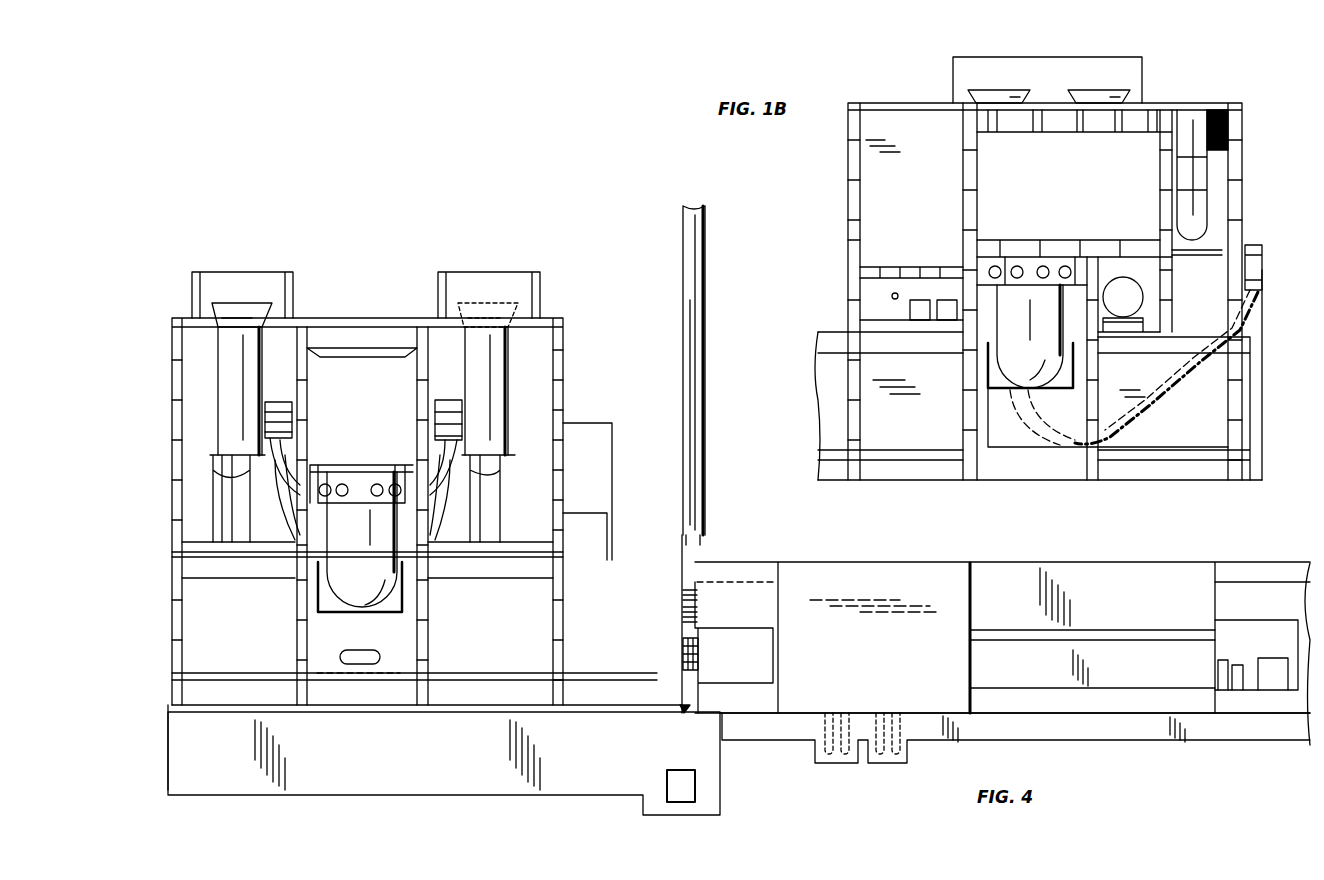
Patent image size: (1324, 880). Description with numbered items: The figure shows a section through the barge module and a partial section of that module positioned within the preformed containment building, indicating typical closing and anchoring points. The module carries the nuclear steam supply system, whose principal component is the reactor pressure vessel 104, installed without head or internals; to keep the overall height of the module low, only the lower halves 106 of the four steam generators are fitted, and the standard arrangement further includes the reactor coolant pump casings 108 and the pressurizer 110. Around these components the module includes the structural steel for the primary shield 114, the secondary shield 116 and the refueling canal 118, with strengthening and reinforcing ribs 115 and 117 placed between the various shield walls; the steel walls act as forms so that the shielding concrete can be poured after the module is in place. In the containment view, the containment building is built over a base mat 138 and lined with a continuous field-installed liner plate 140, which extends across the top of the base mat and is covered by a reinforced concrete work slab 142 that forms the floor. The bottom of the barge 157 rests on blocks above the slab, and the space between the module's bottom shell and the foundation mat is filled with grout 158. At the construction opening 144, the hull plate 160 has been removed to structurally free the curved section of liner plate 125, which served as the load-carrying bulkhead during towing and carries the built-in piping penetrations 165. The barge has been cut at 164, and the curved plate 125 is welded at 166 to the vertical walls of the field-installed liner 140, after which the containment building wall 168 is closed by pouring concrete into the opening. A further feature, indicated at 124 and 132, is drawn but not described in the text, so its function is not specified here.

In FIG. 4, the reactor pressure vessel 104 is at (375, 562).
In FIG. 1B, the reactor pressure vessel 104 is at (1080, 222).
In FIG. 4, the lower halves of the steam generators 106 is at (503, 427).
In FIG. 4, the reactor coolant pump casings 108 is at (276, 402).
In FIG. 1B, the pressurizer 110 is at (1210, 170).
In FIG. 4, the primary shield 114 is at (295, 600).
In FIG. 1B, the primary shield 114 is at (963, 180).
In FIG. 1B, the strengthening and reinforcing ribs 115 is at (975, 235).
In FIG. 4, the secondary shield 116 is at (565, 340).
In FIG. 1B, the secondary shield 116 is at (860, 225).
In FIG. 1B, the strengthening and reinforcing ribs 117 is at (975, 152).
In FIG. 1B, the refueling canal 118 is at (1146, 110).
In FIG. 1B, the discharge chute 124 is at (1265, 277).
In FIG. 4, the bulkhead / curved section of liner plate 125 is at (683, 592).
In FIG. 4, the side box 132 is at (607, 440).
In FIG. 4, the base mat 138 is at (720, 788).
In FIG. 4, the liner plate 140 is at (683, 300).
In FIG. 4, the reinforced concrete work slab 142 is at (190, 688).
In FIG. 4, the construction opening 144 is at (705, 558).
In FIG. 4, the bottom of the barge 157 is at (742, 713).
In FIG. 4, the grout 158 is at (240, 713).
In FIG. 1B, the hull plate 160 is at (818, 378).
In FIG. 4, the cut in the barge 164 is at (695, 705).
In FIG. 4, the penetrations 165 is at (683, 612).
In FIG. 4, the weld 166 is at (682, 535).
In FIG. 4, the containment building wall 168 is at (695, 395).